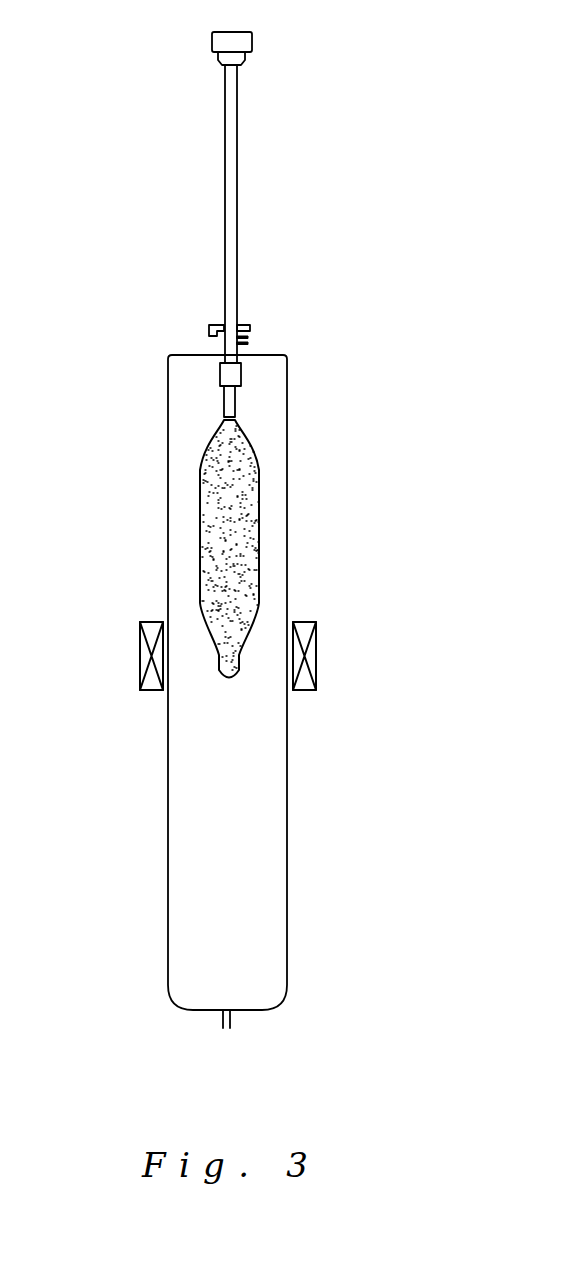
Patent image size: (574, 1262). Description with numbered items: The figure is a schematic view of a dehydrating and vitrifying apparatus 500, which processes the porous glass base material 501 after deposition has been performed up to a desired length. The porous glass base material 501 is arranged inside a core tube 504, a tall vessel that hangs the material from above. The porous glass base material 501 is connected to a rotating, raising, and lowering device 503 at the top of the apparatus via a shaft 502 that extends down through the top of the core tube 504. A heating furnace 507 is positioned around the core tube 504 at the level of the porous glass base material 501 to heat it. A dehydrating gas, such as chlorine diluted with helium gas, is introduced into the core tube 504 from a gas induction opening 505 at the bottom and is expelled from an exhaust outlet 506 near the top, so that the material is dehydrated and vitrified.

The dehydrating and vitrifying apparatus 500 is at (97, 38).
The porous glass base material 501 is at (248, 525).
The shaft 502 is at (237, 273).
The rotating, raising, and lowering device 503 is at (235, 42).
The core tube 504 is at (287, 755).
The gas induction opening 505 is at (227, 1028).
The exhaust outlet 506 is at (257, 342).
The heating furnace 507 is at (317, 657).